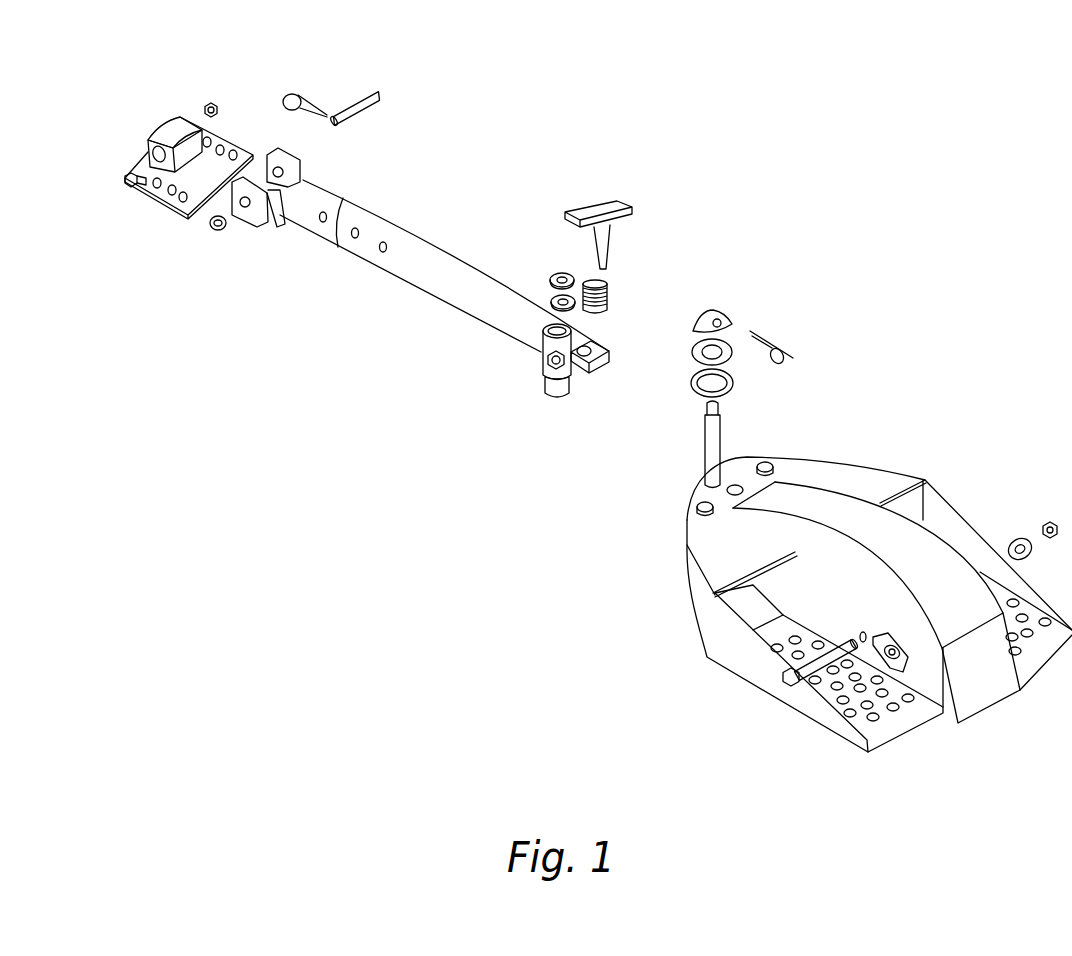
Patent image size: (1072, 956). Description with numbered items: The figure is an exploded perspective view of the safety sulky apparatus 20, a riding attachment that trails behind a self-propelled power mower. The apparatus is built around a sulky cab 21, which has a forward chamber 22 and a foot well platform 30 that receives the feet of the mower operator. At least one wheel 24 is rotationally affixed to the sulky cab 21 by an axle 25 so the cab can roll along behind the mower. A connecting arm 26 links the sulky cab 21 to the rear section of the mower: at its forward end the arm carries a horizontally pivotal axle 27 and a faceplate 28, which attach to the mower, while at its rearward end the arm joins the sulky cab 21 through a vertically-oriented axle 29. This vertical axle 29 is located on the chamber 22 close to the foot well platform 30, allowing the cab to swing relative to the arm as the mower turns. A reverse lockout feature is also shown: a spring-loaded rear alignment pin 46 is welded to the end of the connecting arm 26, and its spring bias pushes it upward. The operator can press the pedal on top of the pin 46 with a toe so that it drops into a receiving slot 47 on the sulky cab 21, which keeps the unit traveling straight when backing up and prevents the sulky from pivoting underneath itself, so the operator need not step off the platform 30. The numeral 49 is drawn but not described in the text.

The safety sulky apparatus 20 is at (952, 140).
The sulky cab 21 is at (727, 670).
The forward chamber 22 is at (718, 556).
The wheel 24 is at (920, 547).
The axle 25 is at (800, 686).
The connecting arm 26 is at (410, 258).
The horizontally pivotal axle 27 is at (357, 105).
The faceplate 28 is at (172, 195).
The vertically-oriented axle 29 is at (713, 455).
The foot well platform 30 is at (903, 720).
The rear alignment pin 46 is at (607, 247).
The receiving slot 47 is at (735, 485).
The clevis 49 is at (333, 205).